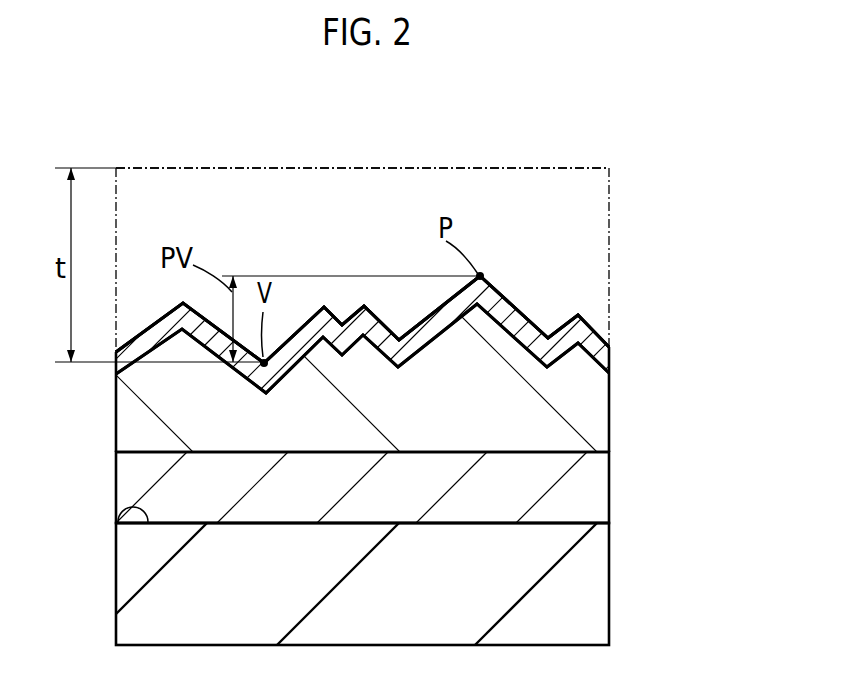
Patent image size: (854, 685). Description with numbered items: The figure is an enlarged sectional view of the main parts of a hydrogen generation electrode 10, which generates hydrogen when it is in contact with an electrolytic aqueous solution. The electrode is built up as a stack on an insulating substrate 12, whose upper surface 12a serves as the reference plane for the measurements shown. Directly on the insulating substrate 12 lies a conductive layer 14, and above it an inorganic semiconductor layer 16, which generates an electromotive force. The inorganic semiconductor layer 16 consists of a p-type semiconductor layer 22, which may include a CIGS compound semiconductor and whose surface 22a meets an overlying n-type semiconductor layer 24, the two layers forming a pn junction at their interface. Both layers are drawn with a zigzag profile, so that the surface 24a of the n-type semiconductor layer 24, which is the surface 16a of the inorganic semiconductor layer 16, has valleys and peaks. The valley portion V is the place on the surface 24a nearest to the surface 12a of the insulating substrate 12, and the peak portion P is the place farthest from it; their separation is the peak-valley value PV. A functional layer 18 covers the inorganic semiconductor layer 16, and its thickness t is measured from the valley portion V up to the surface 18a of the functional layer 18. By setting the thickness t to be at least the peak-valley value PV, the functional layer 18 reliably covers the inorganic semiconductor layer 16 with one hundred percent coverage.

The hydrogen generation electrode 10 is at (558, 122).
The insulating substrate 12 is at (590, 593).
The surface of insulating substrate 12a is at (120, 512).
The conductive layer 14 is at (598, 502).
The inorganic semiconductor layer 16 is at (703, 335).
The surface of inorganic semiconductor layer 16a is at (600, 317).
The functional layer 18 is at (580, 224).
The surface of functional layer 18a is at (557, 168).
The p-type semiconductor layer 22 is at (600, 413).
The surface of p-type semiconductor layer 22a is at (577, 314).
The n-type semiconductor layer 24 is at (600, 357).
The surface of n-type semiconductor layer 24a is at (505, 295).